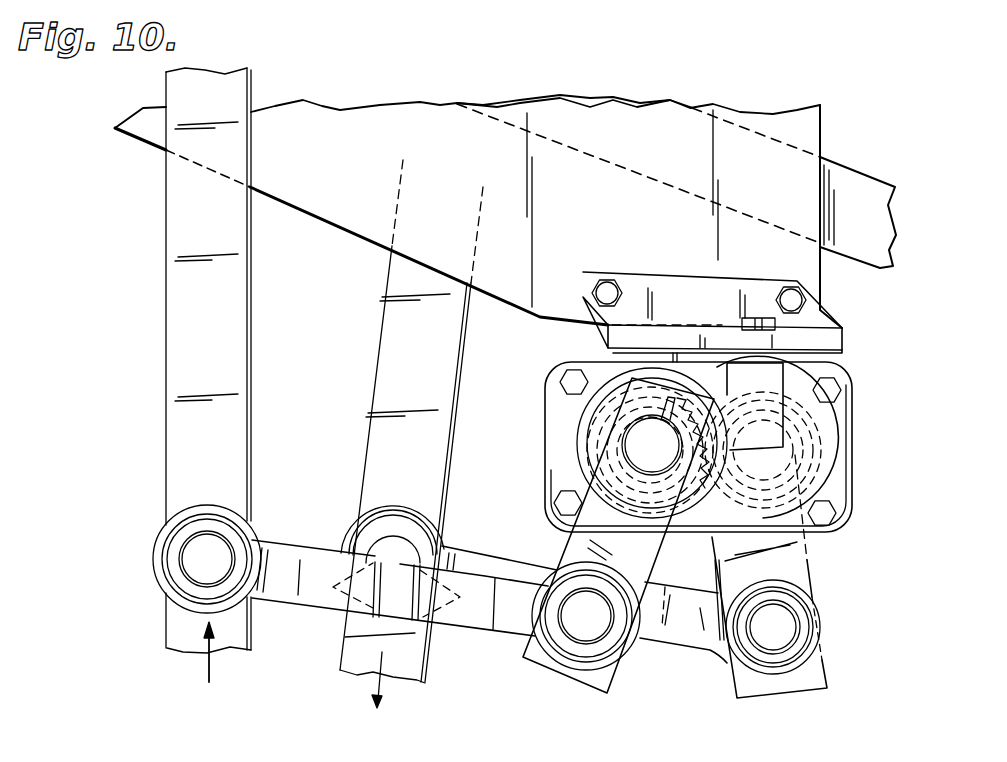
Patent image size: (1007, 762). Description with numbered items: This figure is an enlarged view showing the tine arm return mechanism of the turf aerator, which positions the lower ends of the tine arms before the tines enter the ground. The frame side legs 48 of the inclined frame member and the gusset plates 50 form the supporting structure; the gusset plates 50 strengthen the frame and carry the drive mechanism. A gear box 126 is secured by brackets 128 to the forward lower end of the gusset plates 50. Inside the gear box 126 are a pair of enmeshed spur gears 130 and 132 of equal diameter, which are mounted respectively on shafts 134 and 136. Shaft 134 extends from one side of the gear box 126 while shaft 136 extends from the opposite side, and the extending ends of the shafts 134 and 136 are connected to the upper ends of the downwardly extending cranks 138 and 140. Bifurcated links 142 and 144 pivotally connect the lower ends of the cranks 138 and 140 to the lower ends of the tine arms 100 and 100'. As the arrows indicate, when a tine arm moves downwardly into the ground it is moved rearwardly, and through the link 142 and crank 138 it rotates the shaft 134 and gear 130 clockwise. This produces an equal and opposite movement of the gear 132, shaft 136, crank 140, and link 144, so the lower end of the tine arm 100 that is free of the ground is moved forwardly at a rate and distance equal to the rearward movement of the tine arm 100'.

The parallel side legs 48 is at (856, 183).
The gusset plates 50 is at (344, 113).
The tine arm 100 is at (245, 375).
The tine arm 100' is at (434, 434).
The gear box 126 is at (905, 504).
The brackets 128 is at (667, 283).
The spur gear 130 is at (775, 438).
The spur gear 132 is at (612, 417).
The shaft 134 is at (775, 458).
The shaft 136 is at (636, 443).
The crank 138 is at (802, 563).
The crank 140 is at (578, 524).
The bifurcated link 142 is at (680, 640).
The bifurcated link 144 is at (478, 631).